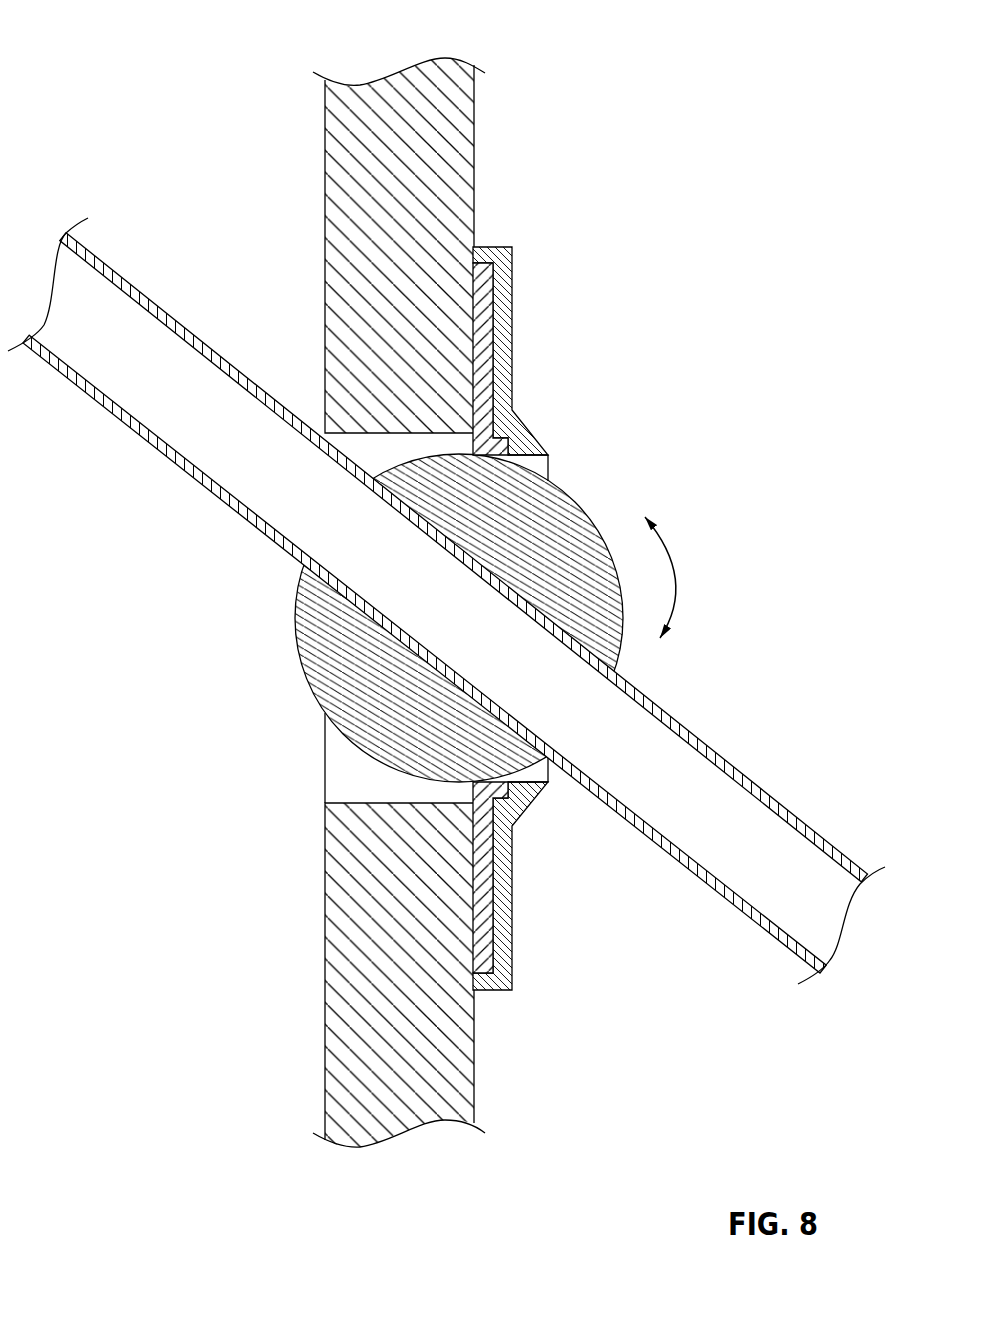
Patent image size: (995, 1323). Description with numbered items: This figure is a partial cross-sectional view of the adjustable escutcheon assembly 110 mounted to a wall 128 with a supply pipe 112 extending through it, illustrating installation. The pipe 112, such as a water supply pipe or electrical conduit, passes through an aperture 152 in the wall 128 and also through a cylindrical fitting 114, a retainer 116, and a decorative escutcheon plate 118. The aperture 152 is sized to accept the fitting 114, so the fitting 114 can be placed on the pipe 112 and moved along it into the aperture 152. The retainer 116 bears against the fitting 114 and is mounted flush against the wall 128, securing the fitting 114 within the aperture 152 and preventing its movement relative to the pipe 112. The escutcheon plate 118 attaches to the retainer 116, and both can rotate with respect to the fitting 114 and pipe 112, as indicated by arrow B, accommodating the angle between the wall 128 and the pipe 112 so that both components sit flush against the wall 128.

The adjustable escutcheon assembly 110 is at (134, 48).
The supply pipe 112 is at (793, 814).
The fitting 114 is at (305, 632).
The retainer 116 is at (484, 930).
The decorative escutcheon plate 118 is at (512, 338).
The wall 128 is at (474, 178).
The aperture 152 is at (345, 776).